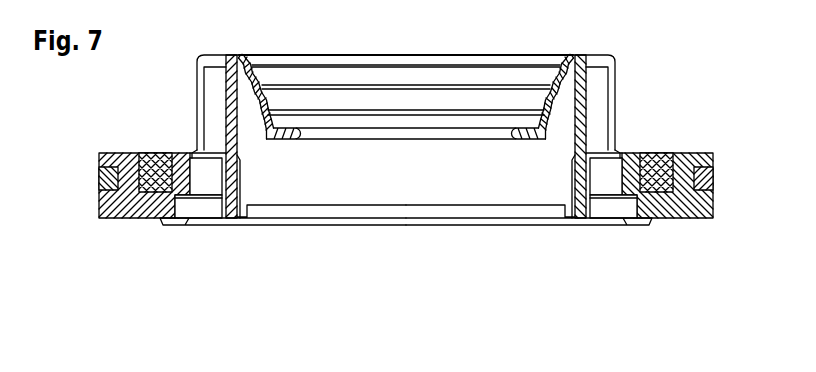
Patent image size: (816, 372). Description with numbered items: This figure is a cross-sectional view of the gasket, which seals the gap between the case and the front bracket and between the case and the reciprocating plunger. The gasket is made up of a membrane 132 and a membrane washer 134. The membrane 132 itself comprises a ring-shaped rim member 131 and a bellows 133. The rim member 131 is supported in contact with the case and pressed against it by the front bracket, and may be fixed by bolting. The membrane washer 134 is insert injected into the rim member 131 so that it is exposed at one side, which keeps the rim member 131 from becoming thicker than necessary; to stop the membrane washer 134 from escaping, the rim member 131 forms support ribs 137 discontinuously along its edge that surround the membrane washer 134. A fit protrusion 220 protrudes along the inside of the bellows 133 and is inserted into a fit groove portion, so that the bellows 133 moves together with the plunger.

The rim member 131 is at (133, 207).
The membrane 132 is at (252, 298).
The bellows 133 is at (270, 131).
The membrane washer 134 is at (108, 178).
The support ribs 137 is at (108, 158).
The fit protrusion 220 is at (512, 138).